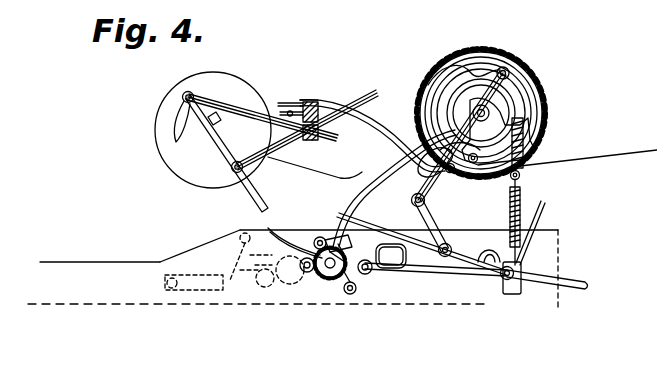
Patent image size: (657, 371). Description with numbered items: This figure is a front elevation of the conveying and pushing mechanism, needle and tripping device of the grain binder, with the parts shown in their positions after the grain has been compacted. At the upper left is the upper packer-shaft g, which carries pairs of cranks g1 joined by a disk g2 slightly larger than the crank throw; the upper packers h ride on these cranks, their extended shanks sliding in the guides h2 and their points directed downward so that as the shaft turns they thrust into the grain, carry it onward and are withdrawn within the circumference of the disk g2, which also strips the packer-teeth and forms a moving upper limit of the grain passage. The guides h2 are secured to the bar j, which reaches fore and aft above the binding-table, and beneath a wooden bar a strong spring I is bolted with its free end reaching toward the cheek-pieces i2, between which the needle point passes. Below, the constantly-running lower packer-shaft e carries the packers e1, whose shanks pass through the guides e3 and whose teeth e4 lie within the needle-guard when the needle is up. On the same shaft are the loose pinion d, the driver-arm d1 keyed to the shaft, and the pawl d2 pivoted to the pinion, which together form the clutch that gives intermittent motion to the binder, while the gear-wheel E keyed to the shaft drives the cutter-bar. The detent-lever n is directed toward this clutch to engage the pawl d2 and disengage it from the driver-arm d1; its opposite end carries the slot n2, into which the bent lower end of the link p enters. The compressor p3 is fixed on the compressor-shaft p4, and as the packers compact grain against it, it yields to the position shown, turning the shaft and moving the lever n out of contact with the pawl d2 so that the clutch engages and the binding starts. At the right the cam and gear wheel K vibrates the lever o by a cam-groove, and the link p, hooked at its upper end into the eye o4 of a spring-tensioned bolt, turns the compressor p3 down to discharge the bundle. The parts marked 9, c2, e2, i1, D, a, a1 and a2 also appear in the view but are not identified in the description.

The cam and gear wheel K is at (481, 100).
The bar j is at (322, 100).
The upper packers h is at (282, 130).
The guides h2 is at (307, 131).
The upper packer-shaft g is at (185, 121).
The block 9 is at (221, 120).
The cranks g1 is at (226, 152).
The disk g2 is at (213, 138).
The spring I is at (315, 171).
The curved rod c2 is at (376, 139).
The teeth e4 is at (394, 193).
The detent-lever n is at (423, 171).
The lower packer-shaft e is at (380, 246).
The packers e1 is at (470, 278).
The bar e2 is at (550, 285).
The guides e3 is at (521, 266).
The pinion d is at (325, 285).
The driver-arm d1 is at (345, 305).
The pawl d2 is at (330, 240).
The gear-wheel E is at (326, 300).
The table line i1 is at (588, 162).
The cheek-pieces i2 is at (295, 241).
The lever o is at (509, 141).
The eye o4 is at (520, 175).
The cam D is at (487, 136).
The link p is at (503, 222).
The compressor p3 is at (539, 226).
The compressor-shaft p4 is at (486, 247).
The slot n2 is at (502, 283).
The frame line a is at (100, 253).
The inclined frame line a1 is at (200, 246).
The frame line a2 is at (405, 265).